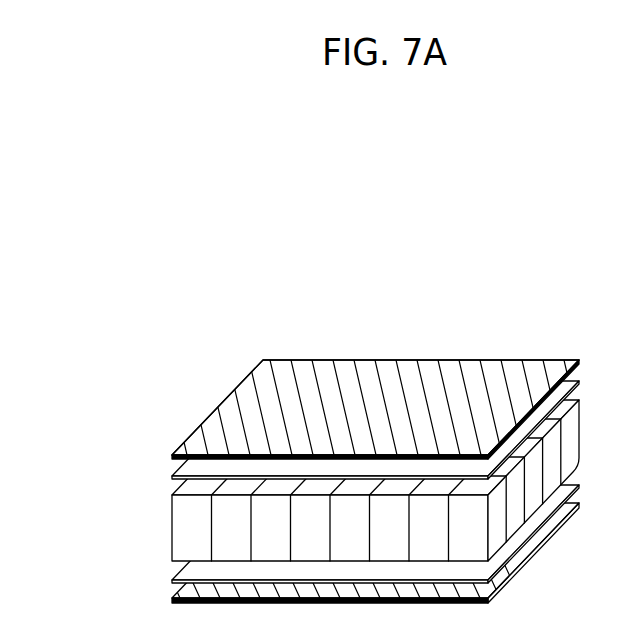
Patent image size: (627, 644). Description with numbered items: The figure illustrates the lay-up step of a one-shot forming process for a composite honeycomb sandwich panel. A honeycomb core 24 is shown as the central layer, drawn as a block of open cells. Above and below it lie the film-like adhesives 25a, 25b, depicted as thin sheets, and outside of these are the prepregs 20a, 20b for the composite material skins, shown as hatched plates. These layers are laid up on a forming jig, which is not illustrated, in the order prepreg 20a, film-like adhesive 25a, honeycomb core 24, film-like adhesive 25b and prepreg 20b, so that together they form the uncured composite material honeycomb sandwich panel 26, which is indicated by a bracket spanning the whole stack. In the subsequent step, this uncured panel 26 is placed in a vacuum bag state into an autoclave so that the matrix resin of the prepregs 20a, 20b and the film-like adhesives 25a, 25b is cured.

The uncured composite material honeycomb sandwich panel 26 is at (85, 398).
The prepreg 20a is at (208, 418).
The film-like adhesive 25a is at (184, 466).
The honeycomb core 24 is at (188, 512).
The film-like adhesive 25b is at (186, 572).
The prepreg 20b is at (180, 593).